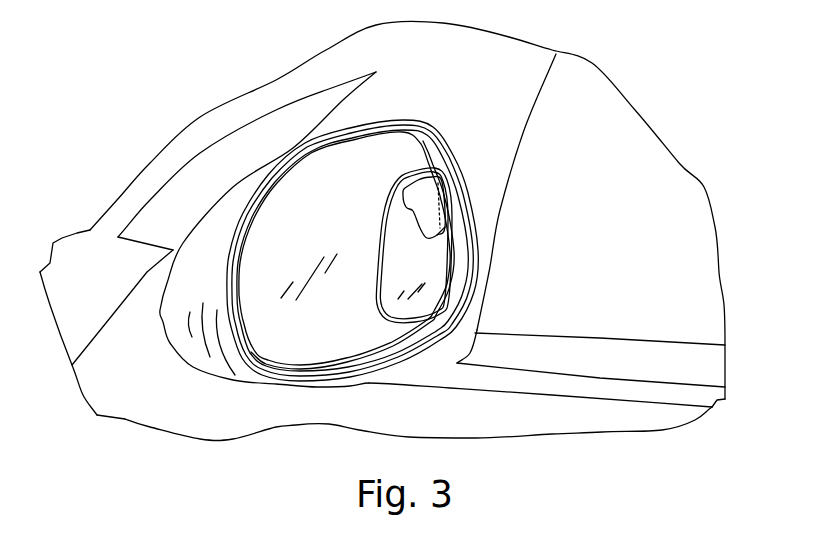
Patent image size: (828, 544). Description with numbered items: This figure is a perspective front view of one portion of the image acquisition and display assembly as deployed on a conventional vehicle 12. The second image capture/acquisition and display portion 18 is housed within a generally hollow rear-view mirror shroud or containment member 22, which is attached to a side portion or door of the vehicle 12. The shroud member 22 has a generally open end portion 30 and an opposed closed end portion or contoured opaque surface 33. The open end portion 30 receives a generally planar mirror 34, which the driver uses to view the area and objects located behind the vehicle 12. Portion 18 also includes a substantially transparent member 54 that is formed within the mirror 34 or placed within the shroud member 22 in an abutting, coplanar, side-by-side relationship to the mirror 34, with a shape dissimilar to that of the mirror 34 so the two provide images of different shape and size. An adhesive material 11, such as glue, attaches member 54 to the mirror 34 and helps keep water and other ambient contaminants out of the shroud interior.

The adhesive material 11 is at (444, 217).
The vehicle 12 is at (168, 419).
The second image capture/acquisition and display portion 18 is at (424, 103).
The shroud or containment member 22 is at (433, 127).
The open end portion 30 is at (453, 157).
The closed end portion or contoured opaque surface 33 is at (161, 325).
The mirror 34 is at (356, 214).
The substantially transparent member 54 is at (426, 270).